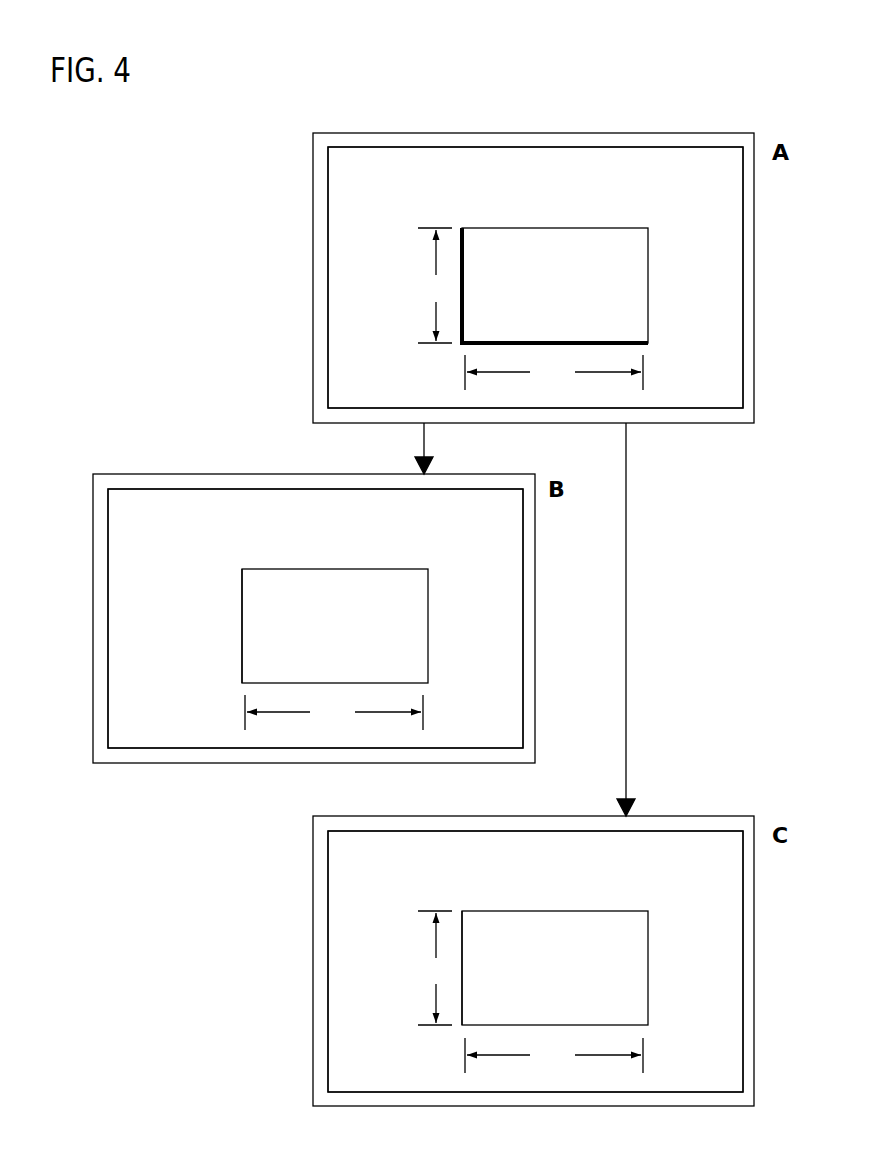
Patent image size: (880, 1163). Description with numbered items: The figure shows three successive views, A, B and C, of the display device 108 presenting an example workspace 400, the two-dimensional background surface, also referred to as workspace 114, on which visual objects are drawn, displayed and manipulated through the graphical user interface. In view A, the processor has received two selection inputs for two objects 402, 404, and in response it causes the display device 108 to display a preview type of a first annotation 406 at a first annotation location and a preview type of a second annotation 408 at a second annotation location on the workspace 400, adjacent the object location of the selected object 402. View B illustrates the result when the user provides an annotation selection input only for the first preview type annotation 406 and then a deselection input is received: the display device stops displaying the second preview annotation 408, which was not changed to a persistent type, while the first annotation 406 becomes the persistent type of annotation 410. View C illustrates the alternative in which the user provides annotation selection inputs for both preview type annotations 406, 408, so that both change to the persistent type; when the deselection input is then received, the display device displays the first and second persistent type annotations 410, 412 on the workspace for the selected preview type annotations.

The workspace 400 is at (661, 89).
The display device 108 is at (313, 188).
The workspace 114 is at (434, 168).
The object 402 is at (596, 342).
The object 404 is at (464, 288).
The first annotation 406 is at (549, 393).
The second annotation 408 is at (406, 237).
The persistent type of annotation 410 is at (315, 733).
The second persistent type annotation 412 is at (406, 919).